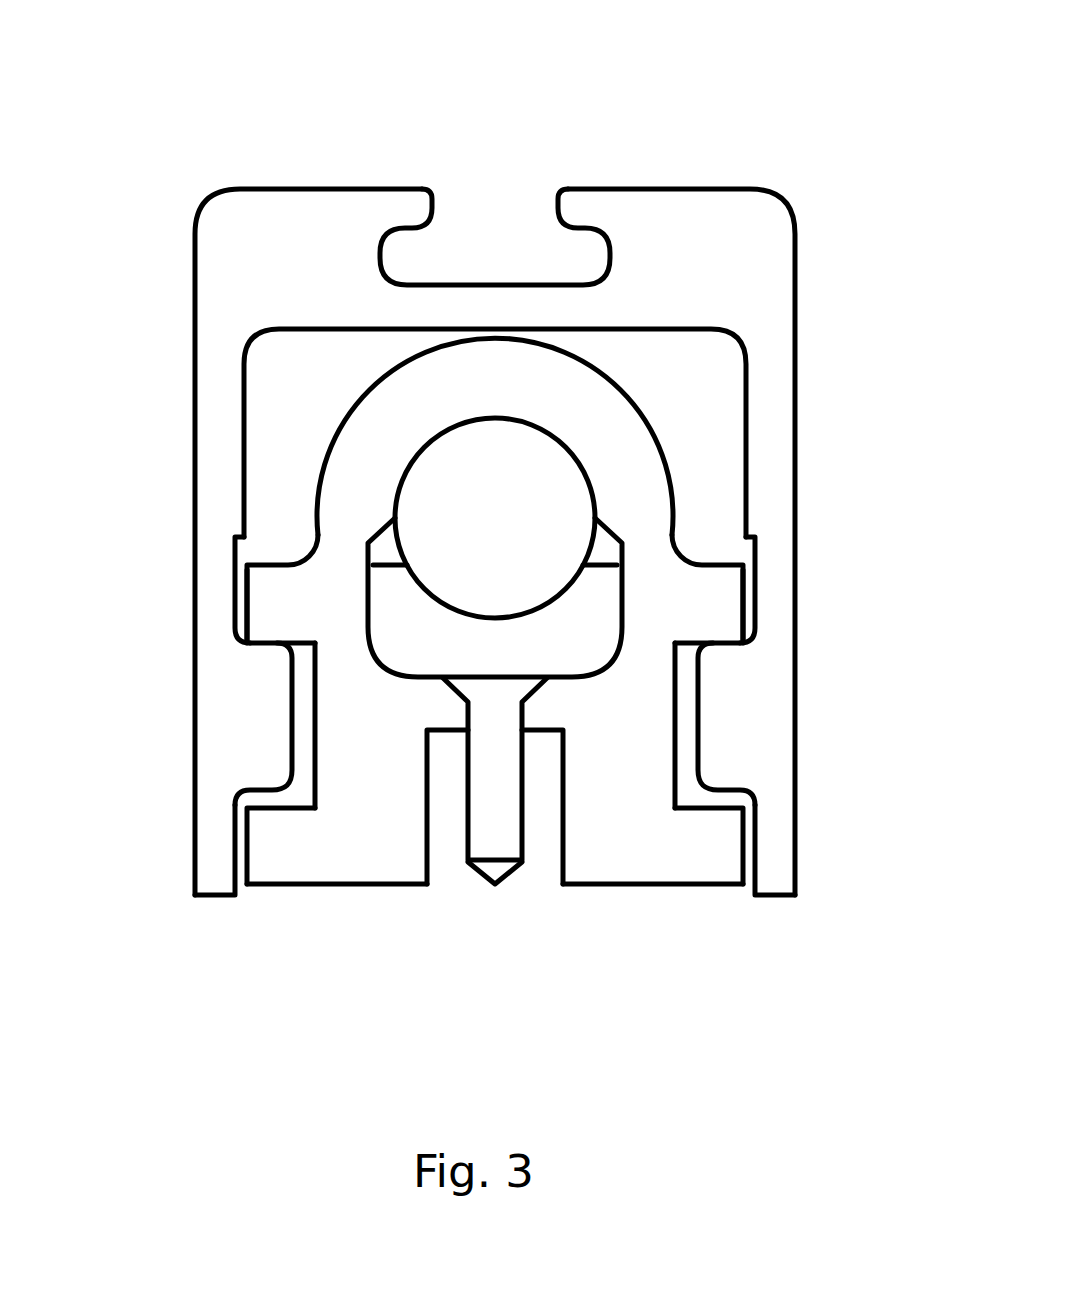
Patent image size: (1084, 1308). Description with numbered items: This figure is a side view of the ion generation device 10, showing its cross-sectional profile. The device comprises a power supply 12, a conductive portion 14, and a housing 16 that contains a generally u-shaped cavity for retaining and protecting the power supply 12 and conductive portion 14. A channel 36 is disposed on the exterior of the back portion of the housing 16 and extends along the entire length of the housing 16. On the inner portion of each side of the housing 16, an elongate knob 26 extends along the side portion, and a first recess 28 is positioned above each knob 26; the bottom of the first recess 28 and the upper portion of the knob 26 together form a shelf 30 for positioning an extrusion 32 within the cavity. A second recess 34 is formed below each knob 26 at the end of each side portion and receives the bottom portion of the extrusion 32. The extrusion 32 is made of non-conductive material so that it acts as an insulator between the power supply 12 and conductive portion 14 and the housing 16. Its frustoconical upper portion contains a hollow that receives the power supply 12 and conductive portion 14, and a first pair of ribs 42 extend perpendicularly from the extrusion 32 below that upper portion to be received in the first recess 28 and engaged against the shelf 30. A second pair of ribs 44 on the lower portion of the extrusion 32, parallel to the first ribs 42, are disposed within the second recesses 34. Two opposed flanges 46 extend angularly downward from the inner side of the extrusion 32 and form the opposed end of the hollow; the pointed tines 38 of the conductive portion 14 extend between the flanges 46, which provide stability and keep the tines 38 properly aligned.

The ion generation device 10 is at (866, 86).
The power supply 12 is at (315, 525).
The conductive portion 14 is at (680, 537).
The housing 16 is at (775, 300).
The elongate knob 26 is at (263, 730).
The first recess 28 is at (245, 607).
The shelf 30 is at (247, 643).
The extrusion 32 is at (333, 445).
The second recess 34 is at (245, 838).
The channel 36 is at (490, 225).
The tine 38 is at (485, 878).
The first pair of ribs 42 is at (245, 578).
The second pair of ribs 44 is at (265, 860).
The flange 46 is at (452, 735).